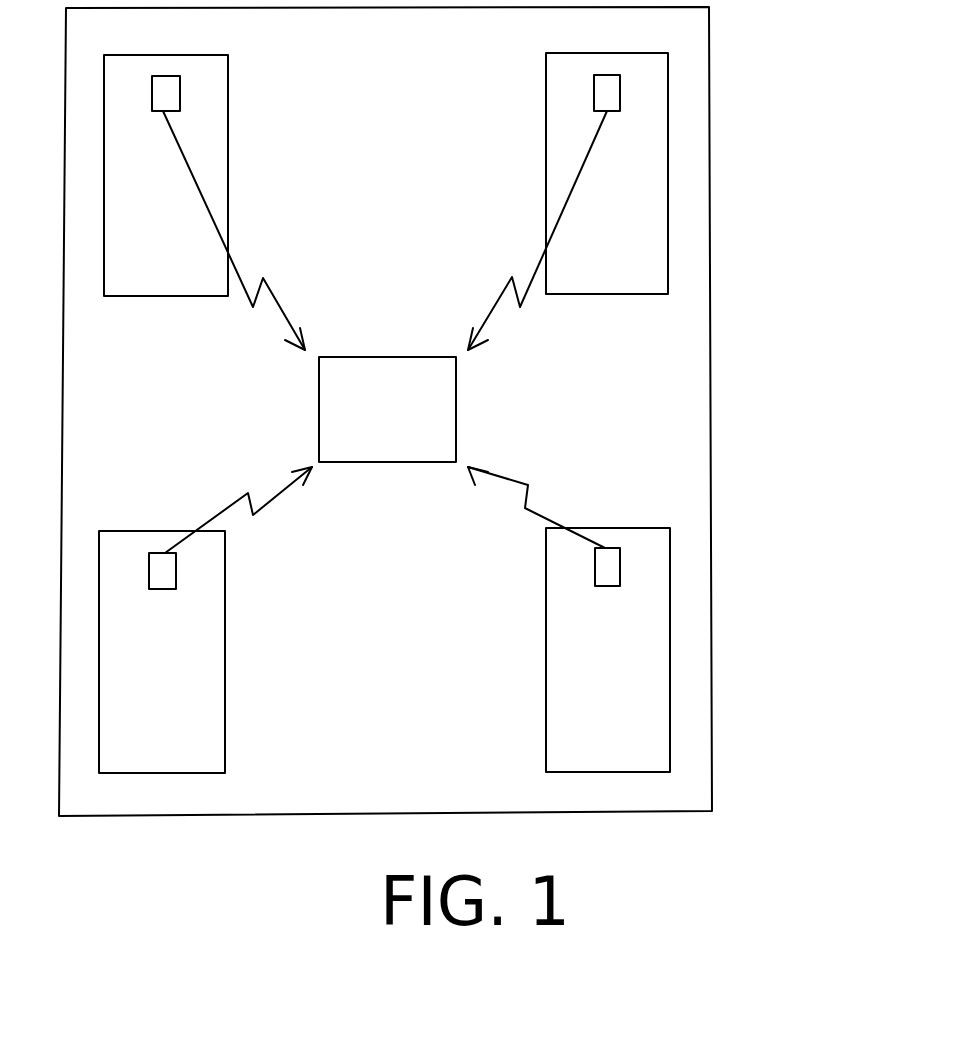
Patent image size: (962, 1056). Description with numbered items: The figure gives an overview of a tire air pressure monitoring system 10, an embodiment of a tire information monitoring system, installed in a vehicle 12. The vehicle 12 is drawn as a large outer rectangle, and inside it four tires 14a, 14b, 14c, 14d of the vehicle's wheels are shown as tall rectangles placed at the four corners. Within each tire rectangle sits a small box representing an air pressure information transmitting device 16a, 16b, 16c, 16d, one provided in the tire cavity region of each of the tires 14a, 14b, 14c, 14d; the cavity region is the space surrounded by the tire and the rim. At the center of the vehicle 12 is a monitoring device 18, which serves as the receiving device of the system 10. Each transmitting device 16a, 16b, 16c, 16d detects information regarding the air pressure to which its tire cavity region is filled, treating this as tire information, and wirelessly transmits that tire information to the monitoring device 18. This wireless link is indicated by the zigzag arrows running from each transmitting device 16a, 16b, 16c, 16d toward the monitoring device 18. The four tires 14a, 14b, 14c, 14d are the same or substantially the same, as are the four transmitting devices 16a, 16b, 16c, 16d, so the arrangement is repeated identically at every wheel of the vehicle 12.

The tire air pressure monitoring system 10 is at (770, 262).
The vehicle 12 is at (712, 405).
The tire 14a is at (228, 167).
The tire 14b is at (546, 172).
The tire 14c is at (226, 650).
The tire 14d is at (546, 657).
The air pressure information transmitting device 16a is at (180, 96).
The air pressure information transmitting device 16b is at (594, 98).
The air pressure information transmitting device 16c is at (176, 570).
The air pressure information transmitting device 16d is at (595, 568).
The monitoring device 18 is at (456, 407).